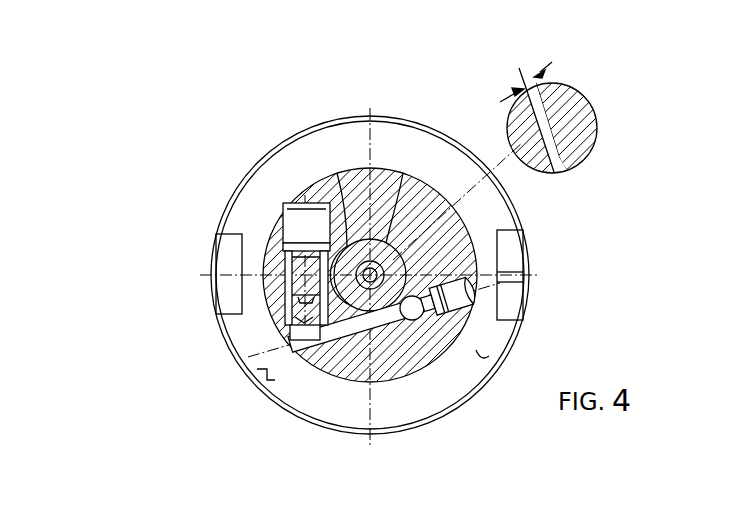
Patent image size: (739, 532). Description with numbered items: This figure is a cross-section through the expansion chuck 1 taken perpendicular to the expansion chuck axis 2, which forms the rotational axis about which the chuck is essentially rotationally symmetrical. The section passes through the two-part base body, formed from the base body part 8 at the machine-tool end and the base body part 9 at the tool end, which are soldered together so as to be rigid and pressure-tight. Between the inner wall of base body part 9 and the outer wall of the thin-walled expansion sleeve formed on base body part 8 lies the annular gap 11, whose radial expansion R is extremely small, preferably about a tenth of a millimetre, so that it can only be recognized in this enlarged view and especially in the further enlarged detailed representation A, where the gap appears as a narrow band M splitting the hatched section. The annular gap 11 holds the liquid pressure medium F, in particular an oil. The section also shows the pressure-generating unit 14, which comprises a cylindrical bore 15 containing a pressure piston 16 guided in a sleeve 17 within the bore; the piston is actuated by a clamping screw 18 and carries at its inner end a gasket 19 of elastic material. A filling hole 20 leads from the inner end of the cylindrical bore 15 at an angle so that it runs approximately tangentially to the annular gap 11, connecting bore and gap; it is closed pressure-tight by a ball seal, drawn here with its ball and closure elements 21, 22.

The expansion chuck 1 is at (104, 144).
The expansion chuck axis 2 is at (400, 180).
The base body part at the machine-tool end 8 is at (483, 357).
The base body part at the tool end 9 is at (413, 385).
The annular gap 11 is at (347, 178).
The pressure-generating unit 14 is at (259, 319).
The cylindrical bore 15 is at (296, 340).
The pressure piston 16 is at (300, 296).
The sleeve 17 is at (285, 268).
The clamping screw 18 is at (290, 217).
The gasket 19 is at (297, 343).
The filling hole 20 is at (367, 343).
The neck 21 is at (342, 348).
The plunger body 22 is at (457, 323).
The liquid pressure medium F is at (290, 355).
The detailed representation A is at (595, 117).
The center line M is at (555, 135).
The radial expansion R is at (519, 86).